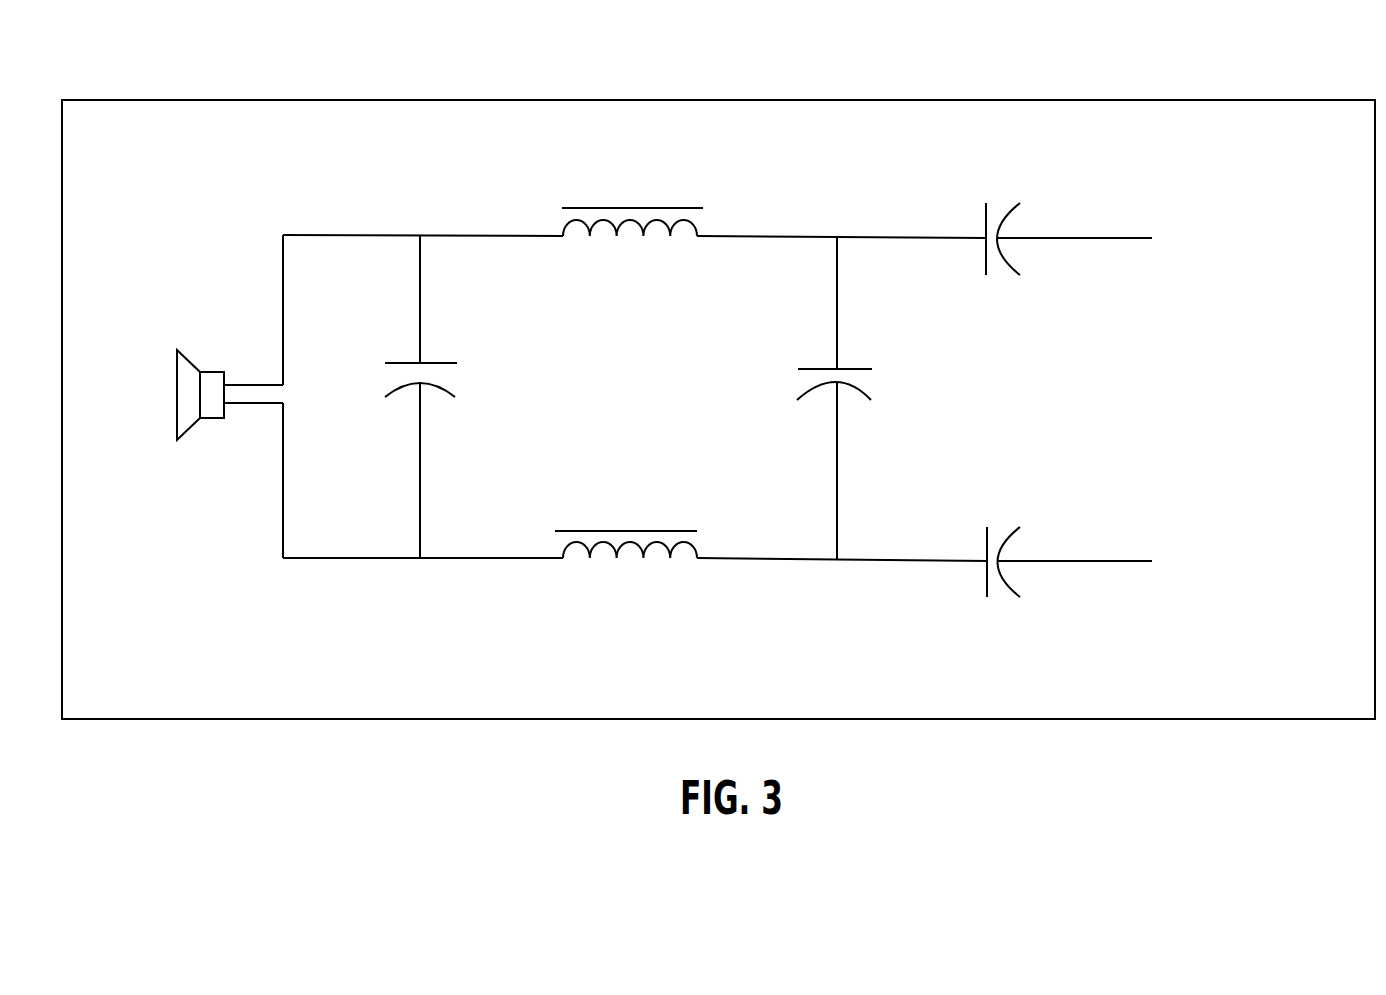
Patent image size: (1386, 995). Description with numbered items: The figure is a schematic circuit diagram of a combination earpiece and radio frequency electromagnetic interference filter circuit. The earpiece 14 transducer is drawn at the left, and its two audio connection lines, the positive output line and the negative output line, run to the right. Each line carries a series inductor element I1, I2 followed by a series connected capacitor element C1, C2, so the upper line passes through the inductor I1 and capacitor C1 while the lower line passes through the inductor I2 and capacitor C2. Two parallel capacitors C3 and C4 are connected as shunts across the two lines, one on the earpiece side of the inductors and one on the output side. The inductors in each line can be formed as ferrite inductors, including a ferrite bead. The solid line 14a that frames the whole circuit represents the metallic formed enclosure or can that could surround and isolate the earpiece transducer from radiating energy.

The earpiece 14 is at (771, 56).
The solid line 14a is at (1118, 720).
The inductor element I1 is at (607, 208).
The inductor element I2 is at (606, 531).
The series connected capacitor element C1 is at (1010, 210).
The series connected capacitor element C2 is at (1010, 532).
The parallel capacitor C3 is at (437, 361).
The parallel capacitor C4 is at (853, 368).